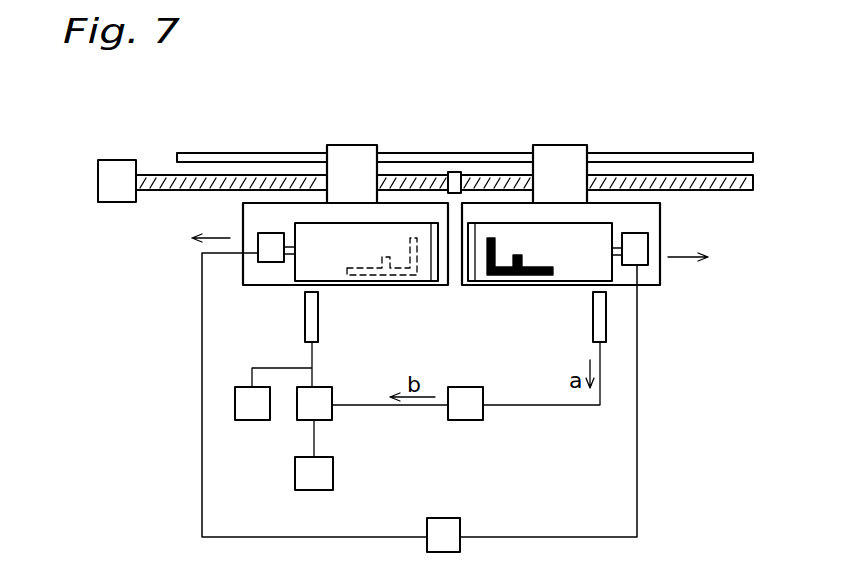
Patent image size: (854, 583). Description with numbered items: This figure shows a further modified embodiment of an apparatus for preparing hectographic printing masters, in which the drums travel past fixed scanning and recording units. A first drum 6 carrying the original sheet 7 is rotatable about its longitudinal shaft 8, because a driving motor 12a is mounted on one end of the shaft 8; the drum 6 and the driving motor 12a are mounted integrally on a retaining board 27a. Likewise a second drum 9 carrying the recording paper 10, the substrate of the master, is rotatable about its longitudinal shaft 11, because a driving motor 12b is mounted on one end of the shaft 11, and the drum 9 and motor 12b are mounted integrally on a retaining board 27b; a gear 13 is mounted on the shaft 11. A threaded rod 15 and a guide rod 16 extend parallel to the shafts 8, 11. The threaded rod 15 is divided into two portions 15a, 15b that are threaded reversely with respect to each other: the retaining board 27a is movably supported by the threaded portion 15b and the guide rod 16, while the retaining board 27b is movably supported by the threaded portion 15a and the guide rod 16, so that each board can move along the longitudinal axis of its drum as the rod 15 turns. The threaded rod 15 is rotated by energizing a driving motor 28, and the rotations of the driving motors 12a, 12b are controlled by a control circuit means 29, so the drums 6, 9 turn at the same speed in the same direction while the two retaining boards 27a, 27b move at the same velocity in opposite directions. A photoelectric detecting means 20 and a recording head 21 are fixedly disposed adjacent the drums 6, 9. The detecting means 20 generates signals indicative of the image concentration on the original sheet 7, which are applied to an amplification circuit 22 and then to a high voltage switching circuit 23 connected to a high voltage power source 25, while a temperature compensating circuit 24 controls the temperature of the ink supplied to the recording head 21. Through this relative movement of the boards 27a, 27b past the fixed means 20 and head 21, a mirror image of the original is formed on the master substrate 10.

The first drum 6 is at (614, 257).
The original sheet 7 is at (572, 263).
The horizontal shaft 8 is at (637, 266).
The second drum 9 is at (293, 263).
The recording paper 10 is at (333, 270).
The horizontal shaft 11 is at (290, 240).
The driving motor 12a is at (638, 240).
The driving motor 12b is at (267, 262).
The gear 13 is at (455, 174).
The threaded rod 15 is at (158, 173).
The threaded portion 15a is at (402, 177).
The threaded portion 15b is at (512, 177).
The guide rod 16 is at (240, 155).
The photoelectric detecting means 20 is at (598, 315).
The recording head 21 is at (314, 322).
The amplification circuit 22 is at (475, 412).
The high voltage switching circuit 23 is at (322, 410).
The temperature compensating circuit 24 is at (248, 412).
The high voltage power source 25 is at (300, 478).
The retaining board 27a is at (652, 268).
The retaining board 27b is at (250, 262).
The driving motor 28 is at (113, 192).
The control circuit means 29 is at (445, 530).